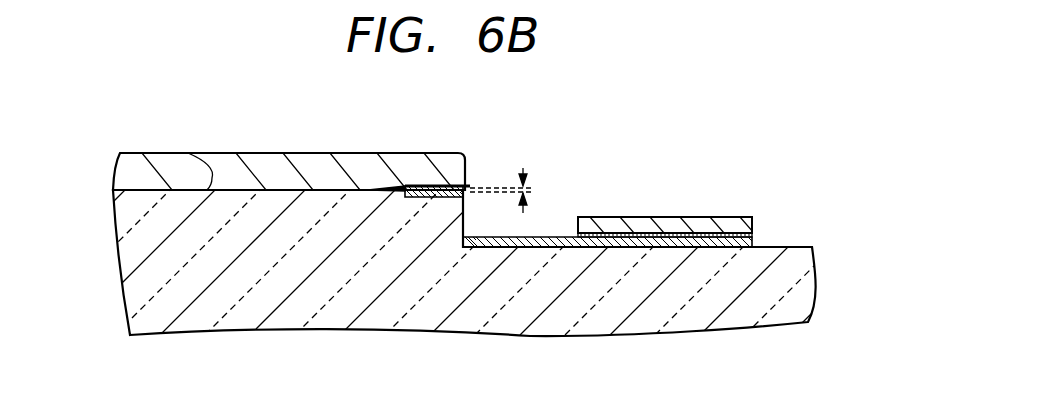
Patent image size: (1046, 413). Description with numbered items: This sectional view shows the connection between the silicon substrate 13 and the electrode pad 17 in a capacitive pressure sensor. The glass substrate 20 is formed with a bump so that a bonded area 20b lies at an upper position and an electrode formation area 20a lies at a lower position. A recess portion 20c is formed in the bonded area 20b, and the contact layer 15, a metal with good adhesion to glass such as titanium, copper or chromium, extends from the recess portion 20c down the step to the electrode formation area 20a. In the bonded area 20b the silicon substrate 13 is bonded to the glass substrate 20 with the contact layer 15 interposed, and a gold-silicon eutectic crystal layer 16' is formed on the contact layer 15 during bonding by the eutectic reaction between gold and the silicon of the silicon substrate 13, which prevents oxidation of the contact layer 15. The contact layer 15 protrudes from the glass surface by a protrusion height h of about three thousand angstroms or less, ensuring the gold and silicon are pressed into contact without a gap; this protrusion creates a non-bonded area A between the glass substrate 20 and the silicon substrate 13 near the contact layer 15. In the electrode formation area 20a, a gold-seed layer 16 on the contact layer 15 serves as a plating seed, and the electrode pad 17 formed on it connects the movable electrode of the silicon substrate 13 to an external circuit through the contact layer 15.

The silicon substrate 13 is at (310, 162).
The contact layer 15 is at (475, 212).
The gold-seed layer 16 is at (672, 197).
The gold-silicon eutectic crystal layer 16' is at (493, 147).
The electrode pad 17 is at (668, 220).
The glass substrate 20 is at (727, 318).
The electrode formation area 20a is at (788, 247).
The bonded area 20b is at (198, 152).
The recess portion 20c is at (432, 198).
The non-bonded area A is at (392, 182).
The protrusion height h is at (508, 190).